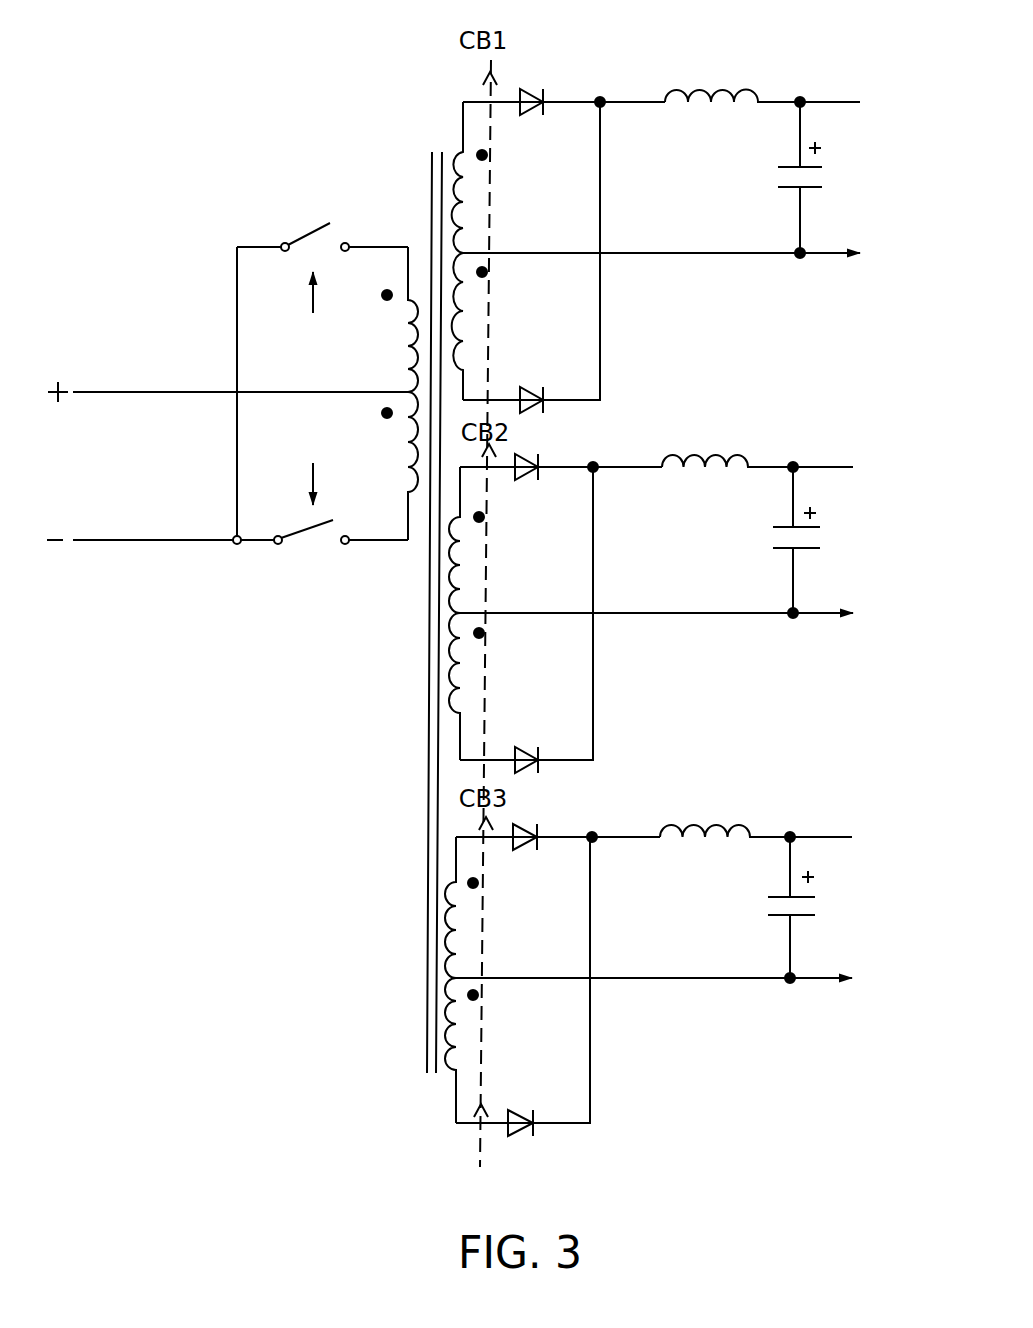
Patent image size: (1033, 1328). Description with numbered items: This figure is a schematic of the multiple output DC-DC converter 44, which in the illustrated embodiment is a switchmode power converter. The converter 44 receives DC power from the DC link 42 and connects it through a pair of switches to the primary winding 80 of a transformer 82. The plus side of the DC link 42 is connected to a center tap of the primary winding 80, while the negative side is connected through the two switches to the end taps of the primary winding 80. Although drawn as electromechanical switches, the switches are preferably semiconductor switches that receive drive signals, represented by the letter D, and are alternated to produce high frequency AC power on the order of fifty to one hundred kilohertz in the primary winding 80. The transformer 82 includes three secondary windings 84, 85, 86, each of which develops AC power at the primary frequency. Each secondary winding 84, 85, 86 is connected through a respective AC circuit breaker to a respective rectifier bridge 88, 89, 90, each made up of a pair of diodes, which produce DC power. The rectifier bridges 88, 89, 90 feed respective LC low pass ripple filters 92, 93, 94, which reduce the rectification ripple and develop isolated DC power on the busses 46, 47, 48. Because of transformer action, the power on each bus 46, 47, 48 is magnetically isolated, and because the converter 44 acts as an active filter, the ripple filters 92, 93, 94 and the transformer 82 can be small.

The DC link 42 is at (52, 490).
The multiple output DC-DC converter 44 is at (338, 805).
The bus 46 is at (857, 195).
The bus 47 is at (849, 558).
The bus 48 is at (854, 925).
The primary winding 80 is at (405, 353).
The transformer 82 is at (428, 138).
The secondary winding 84 is at (472, 223).
The secondary winding 85 is at (467, 570).
The secondary winding 86 is at (470, 947).
The rectifier bridge 88 is at (552, 88).
The rectifier bridge 89 is at (562, 462).
The rectifier bridge 90 is at (552, 825).
The LC low pass ripple filter 92 is at (767, 85).
The LC low pass ripple filter 93 is at (757, 452).
The LC low pass ripple filter 94 is at (758, 818).